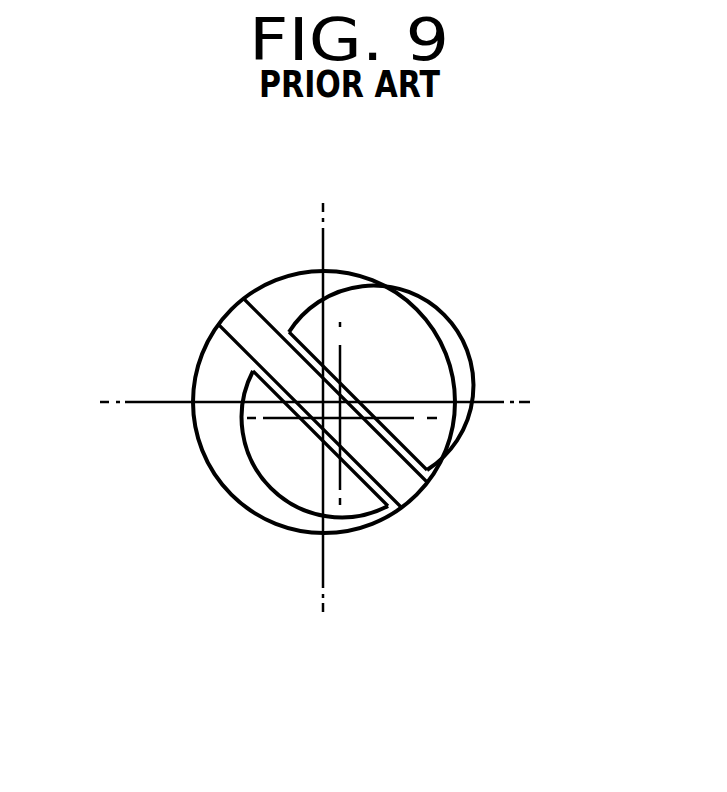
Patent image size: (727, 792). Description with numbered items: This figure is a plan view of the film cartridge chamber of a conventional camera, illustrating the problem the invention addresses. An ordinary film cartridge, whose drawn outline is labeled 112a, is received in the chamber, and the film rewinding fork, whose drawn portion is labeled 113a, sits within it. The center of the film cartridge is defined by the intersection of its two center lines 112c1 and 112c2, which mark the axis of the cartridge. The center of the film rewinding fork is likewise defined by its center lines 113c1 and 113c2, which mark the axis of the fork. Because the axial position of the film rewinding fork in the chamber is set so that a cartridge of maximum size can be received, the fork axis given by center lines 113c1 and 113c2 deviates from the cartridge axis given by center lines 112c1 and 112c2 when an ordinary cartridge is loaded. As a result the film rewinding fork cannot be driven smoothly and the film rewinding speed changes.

The outer sleeve (housing) with slot 112a is at (281, 291).
The inner member (shaft) with slot 113a is at (268, 465).
The center line of the film cartridge 112c1 is at (323, 233).
The center line of the film cartridge 112c2 is at (359, 407).
The center line of the film rewinding fork 113c1 is at (341, 355).
The center line of the film rewinding fork 113c2 is at (418, 424).